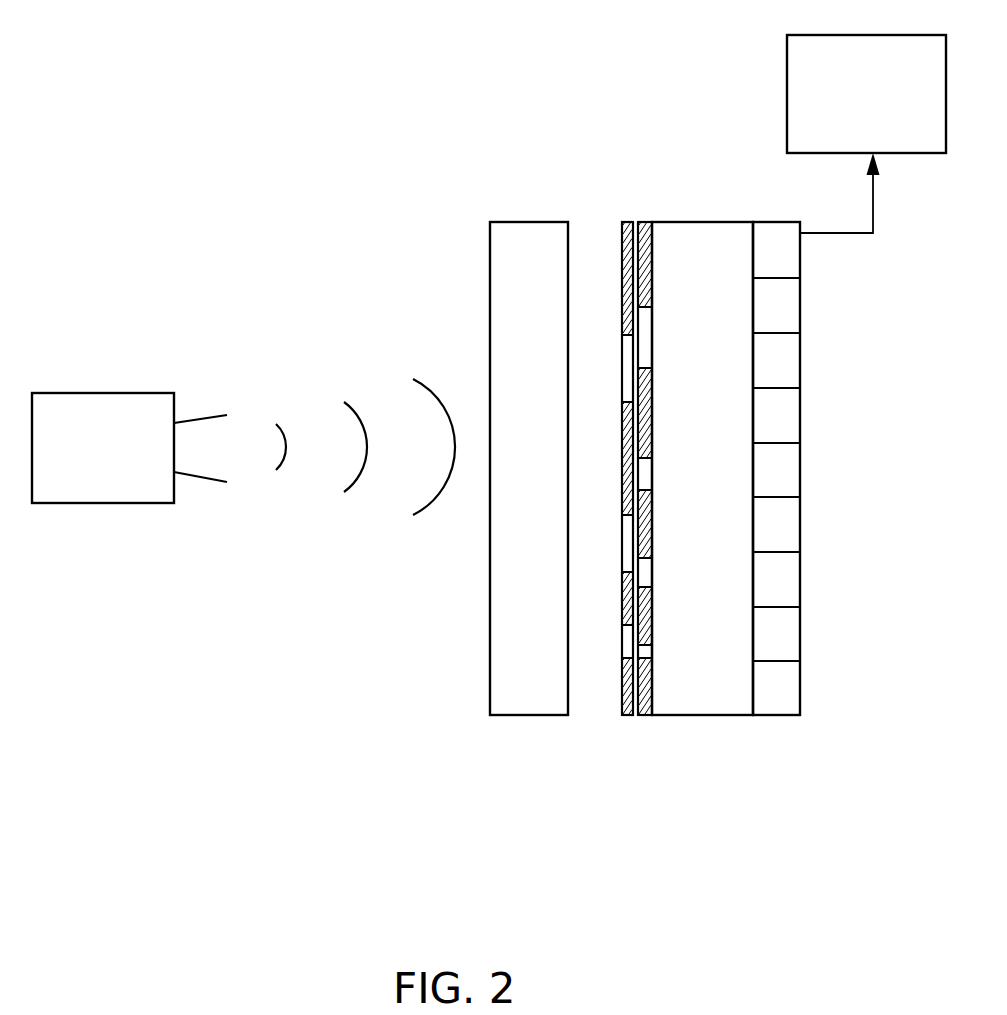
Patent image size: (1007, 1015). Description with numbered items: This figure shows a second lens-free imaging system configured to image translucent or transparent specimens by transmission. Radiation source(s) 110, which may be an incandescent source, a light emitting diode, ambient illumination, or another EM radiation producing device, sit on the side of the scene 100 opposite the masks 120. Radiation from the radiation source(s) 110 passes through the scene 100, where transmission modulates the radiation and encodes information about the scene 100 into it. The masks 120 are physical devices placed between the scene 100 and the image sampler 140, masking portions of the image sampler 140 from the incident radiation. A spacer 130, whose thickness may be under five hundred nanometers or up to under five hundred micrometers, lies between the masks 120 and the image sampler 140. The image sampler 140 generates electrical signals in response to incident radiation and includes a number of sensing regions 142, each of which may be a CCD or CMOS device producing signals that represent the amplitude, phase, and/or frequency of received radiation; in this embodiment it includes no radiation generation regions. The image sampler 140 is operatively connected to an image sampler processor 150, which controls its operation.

The scene 100 is at (510, 446).
The radiation source(s) 110 is at (84, 488).
The masks 120 is at (641, 758).
The spacer 130 is at (698, 758).
The image sampler 140 is at (777, 758).
The sensing regions 142 is at (817, 404).
The image sampler processor 150 is at (849, 148).